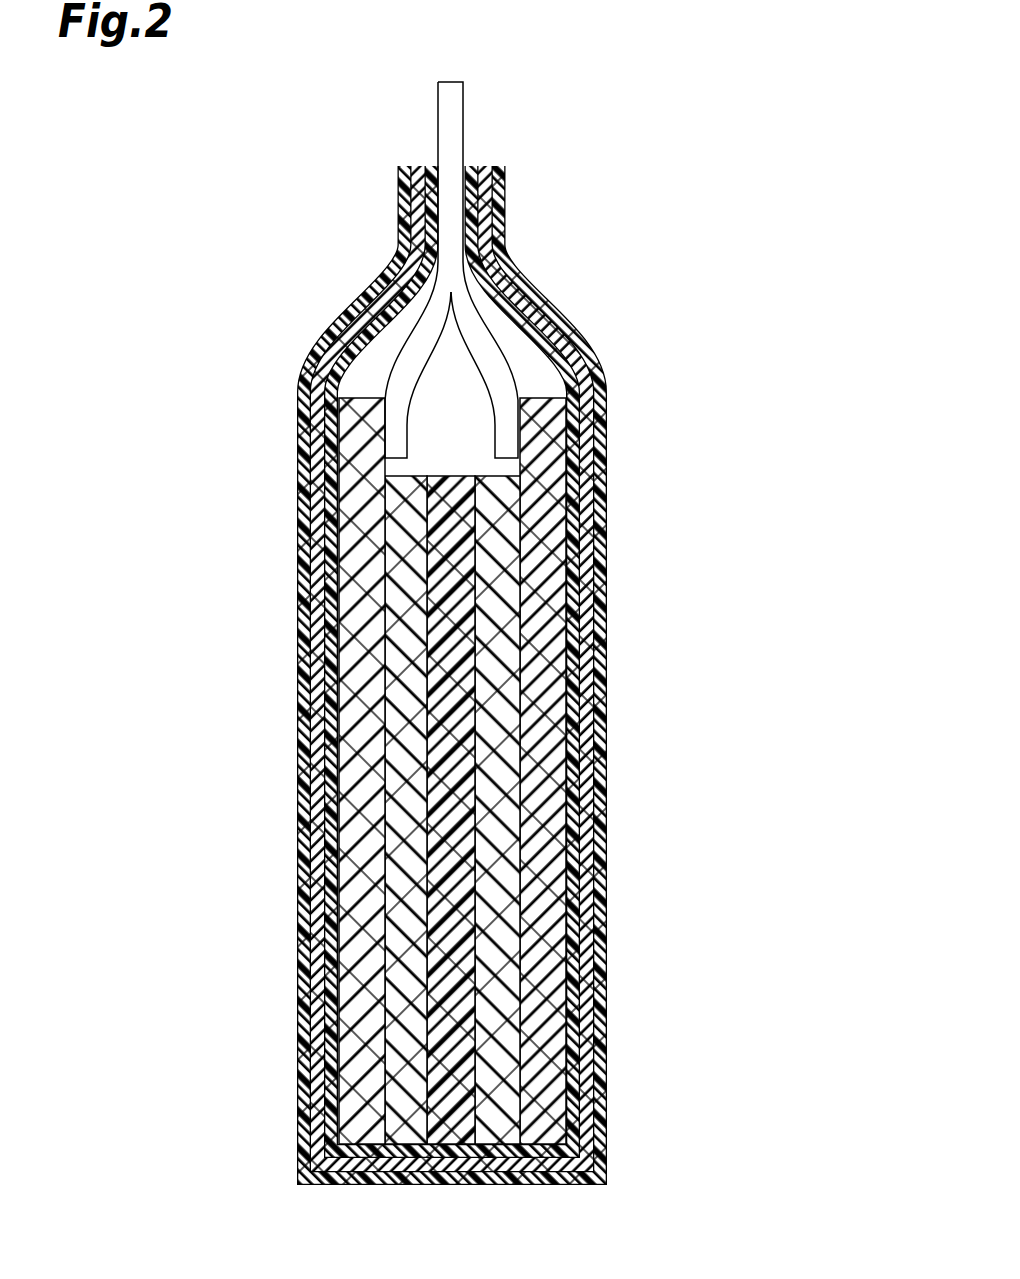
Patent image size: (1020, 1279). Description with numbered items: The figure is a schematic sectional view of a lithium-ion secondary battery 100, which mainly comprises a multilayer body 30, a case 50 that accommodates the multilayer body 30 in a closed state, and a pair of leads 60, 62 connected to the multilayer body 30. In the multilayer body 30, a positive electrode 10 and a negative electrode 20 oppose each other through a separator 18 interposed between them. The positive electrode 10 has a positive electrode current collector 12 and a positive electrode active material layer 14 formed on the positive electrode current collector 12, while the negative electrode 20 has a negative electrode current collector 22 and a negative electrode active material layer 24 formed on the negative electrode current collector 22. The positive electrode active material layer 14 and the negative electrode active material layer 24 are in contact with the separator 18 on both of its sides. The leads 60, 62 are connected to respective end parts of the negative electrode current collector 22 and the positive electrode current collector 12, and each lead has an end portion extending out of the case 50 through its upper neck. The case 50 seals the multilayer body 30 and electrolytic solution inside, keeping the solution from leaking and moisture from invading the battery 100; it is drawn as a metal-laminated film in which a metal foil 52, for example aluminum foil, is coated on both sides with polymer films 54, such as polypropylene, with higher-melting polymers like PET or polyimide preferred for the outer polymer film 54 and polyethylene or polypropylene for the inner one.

The lithium-ion secondary battery 100 is at (678, 113).
The positive electrode 10 is at (372, 771).
The positive electrode current collector 12 is at (527, 588).
The positive electrode active material layer 14 is at (498, 623).
The separator 18 is at (448, 668).
The negative electrode 20 is at (302, 771).
The negative electrode current collector 22 is at (358, 735).
The negative electrode active material layer 24 is at (400, 702).
The multilayer body 30 is at (346, 771).
The case 50 is at (531, 665).
The metal foil 52 is at (587, 828).
The polymer films 54 is at (575, 793).
The lead 60 is at (427, 315).
The lead 62 is at (473, 315).